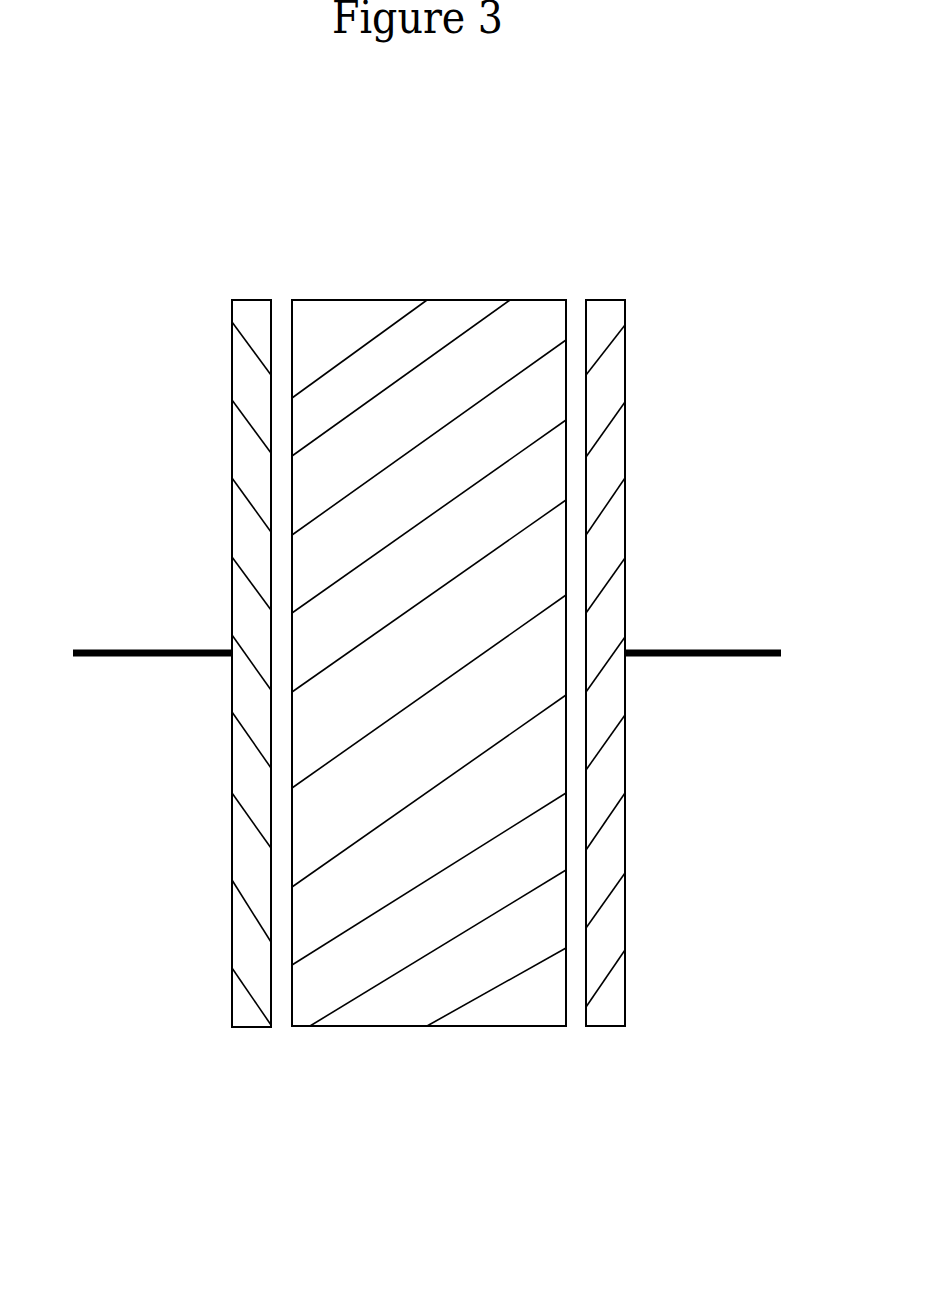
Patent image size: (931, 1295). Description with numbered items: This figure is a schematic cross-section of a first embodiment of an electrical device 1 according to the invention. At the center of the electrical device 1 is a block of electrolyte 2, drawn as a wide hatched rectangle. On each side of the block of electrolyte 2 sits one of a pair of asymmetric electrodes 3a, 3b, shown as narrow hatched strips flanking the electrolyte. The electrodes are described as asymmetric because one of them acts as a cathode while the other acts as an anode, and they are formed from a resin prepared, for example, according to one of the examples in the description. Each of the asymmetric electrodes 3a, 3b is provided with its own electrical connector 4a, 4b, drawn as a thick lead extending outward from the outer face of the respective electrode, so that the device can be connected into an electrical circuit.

The electrical device 1 is at (380, 1051).
The block of electrolyte 2 is at (450, 300).
The asymmetric electrode 3a is at (230, 495).
The asymmetric electrode 3b is at (627, 515).
The electrical connector 4a is at (148, 648).
The electrical connector 4b is at (685, 657).